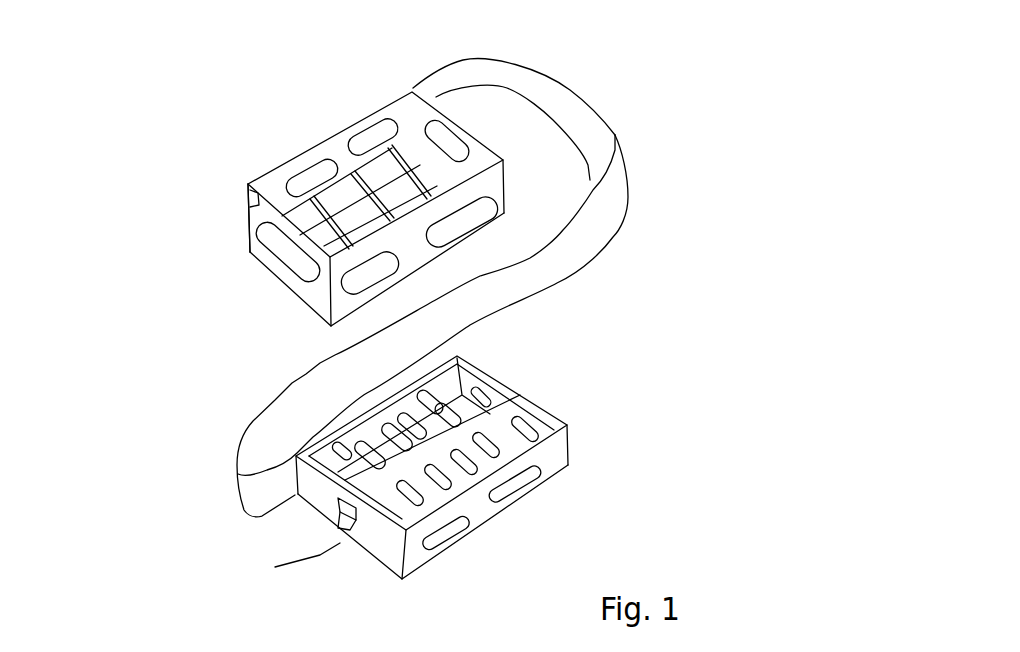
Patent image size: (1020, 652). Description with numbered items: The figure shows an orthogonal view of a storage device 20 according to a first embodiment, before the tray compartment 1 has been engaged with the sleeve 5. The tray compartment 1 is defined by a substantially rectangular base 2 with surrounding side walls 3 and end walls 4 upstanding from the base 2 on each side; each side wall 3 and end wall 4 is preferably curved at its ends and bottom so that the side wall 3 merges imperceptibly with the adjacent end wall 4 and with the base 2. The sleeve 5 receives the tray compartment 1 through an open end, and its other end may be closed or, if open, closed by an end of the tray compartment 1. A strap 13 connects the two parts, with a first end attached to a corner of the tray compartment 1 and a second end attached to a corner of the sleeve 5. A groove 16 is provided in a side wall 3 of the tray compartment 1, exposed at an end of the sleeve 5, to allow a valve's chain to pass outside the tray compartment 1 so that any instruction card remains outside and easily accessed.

The tray compartment 1 is at (337, 132).
The base 2 is at (380, 172).
The side wall 3 is at (270, 168).
The end wall 4 is at (257, 228).
The sleeve 5 is at (533, 398).
The strap 13 is at (607, 215).
The groove 16 is at (247, 203).
The storage device 20 is at (643, 85).